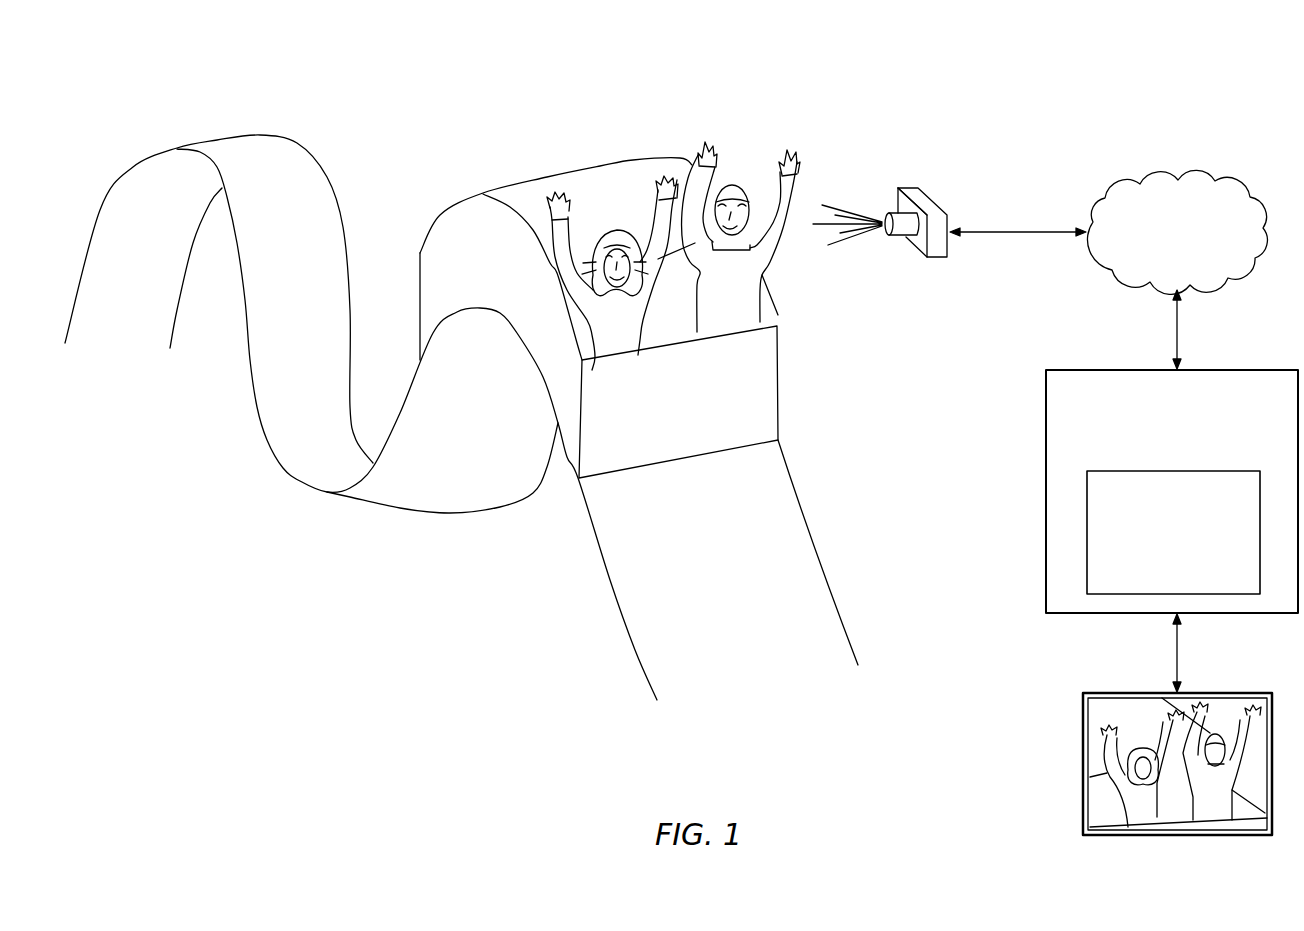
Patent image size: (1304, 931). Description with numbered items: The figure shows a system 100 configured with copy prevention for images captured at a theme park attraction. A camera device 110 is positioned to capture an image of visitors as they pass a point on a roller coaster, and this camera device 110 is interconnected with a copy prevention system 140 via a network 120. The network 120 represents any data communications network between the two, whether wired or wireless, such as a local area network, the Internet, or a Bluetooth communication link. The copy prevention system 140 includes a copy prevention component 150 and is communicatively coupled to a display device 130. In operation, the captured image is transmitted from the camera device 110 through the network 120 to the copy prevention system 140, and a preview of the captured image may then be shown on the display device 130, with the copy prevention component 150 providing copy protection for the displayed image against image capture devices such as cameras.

The system 100 is at (1035, 57).
The camera device 110 is at (833, 160).
The network 120 is at (1197, 256).
The display device 130 is at (1083, 765).
The copy prevention system 140 is at (1192, 460).
The copy prevention component 150 is at (1192, 582).